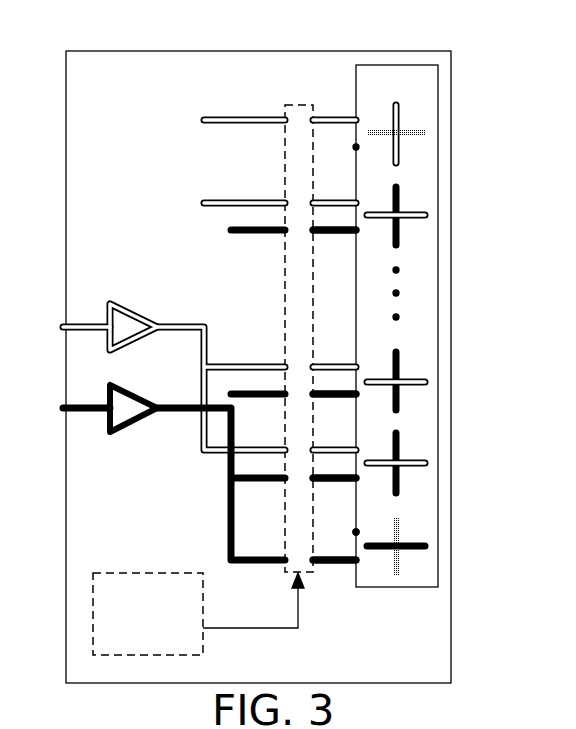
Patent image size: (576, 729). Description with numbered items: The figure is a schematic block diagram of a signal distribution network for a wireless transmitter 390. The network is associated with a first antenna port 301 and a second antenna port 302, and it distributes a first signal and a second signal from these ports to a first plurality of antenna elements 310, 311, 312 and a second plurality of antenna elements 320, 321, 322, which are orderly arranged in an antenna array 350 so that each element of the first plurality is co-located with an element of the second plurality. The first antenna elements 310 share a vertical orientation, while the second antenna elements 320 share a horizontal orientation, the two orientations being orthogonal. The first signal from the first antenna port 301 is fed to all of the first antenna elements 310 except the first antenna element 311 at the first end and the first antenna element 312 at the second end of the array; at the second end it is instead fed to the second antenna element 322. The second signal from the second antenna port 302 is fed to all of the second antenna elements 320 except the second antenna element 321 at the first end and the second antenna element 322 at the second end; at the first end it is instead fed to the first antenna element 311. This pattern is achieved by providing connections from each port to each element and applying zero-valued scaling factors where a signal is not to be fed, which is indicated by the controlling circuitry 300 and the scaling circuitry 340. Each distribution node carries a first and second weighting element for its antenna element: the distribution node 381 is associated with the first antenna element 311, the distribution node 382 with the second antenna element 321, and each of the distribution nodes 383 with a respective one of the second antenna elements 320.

The wireless transmitter 390 is at (258, 367).
The antenna array 350 is at (395, 326).
The scaling circuitry 340 is at (297, 105).
The controlling circuitry 300 is at (198, 614).
The first antenna port 301 is at (189, 285).
The second antenna port 302 is at (189, 395).
The second antenna element at second end 322 is at (399, 105).
The first antenna element at second end 312 is at (425, 133).
The second antenna elements 320 is at (401, 440).
The first antenna elements 310 is at (412, 462).
The second antenna element at first end 321 is at (398, 517).
The first antenna element at first end 311 is at (418, 540).
The distribution node 381 is at (350, 566).
The distribution node 382 is at (355, 532).
The distribution nodes 383 is at (356, 232).